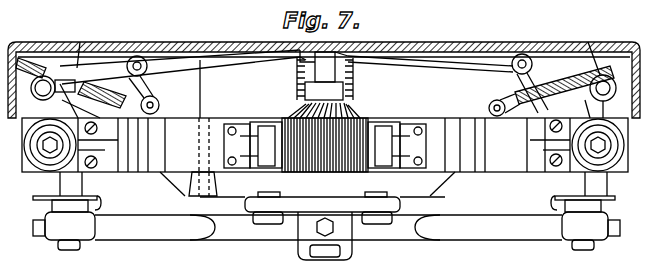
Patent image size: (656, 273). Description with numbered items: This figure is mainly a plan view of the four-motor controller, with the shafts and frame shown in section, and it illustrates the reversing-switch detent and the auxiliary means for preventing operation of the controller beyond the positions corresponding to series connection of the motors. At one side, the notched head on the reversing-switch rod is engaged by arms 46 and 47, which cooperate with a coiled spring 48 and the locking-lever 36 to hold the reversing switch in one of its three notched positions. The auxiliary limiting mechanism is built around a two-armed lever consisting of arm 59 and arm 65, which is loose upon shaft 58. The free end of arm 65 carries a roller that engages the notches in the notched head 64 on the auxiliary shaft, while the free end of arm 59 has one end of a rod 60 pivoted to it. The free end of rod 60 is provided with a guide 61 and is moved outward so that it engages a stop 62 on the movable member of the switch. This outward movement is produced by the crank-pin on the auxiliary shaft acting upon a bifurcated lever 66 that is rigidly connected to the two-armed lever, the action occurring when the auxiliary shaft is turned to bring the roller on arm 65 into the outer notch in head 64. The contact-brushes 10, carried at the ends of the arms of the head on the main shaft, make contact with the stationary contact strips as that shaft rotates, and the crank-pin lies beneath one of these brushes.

The contact-brush 10 is at (600, 240).
The locking-lever 36 is at (450, 66).
The arm 46 is at (564, 81).
The arm 47 is at (492, 93).
The coiled spring 48 is at (600, 71).
The shaft 58 is at (140, 58).
The arm of two-armed lever 59 is at (196, 60).
The rod 60 is at (201, 98).
The guide 61 is at (222, 186).
The stop 62 is at (190, 200).
The notched head 64 is at (84, 39).
The arm of two-armed lever 65 is at (109, 97).
The bifurcated lever 66 is at (61, 79).